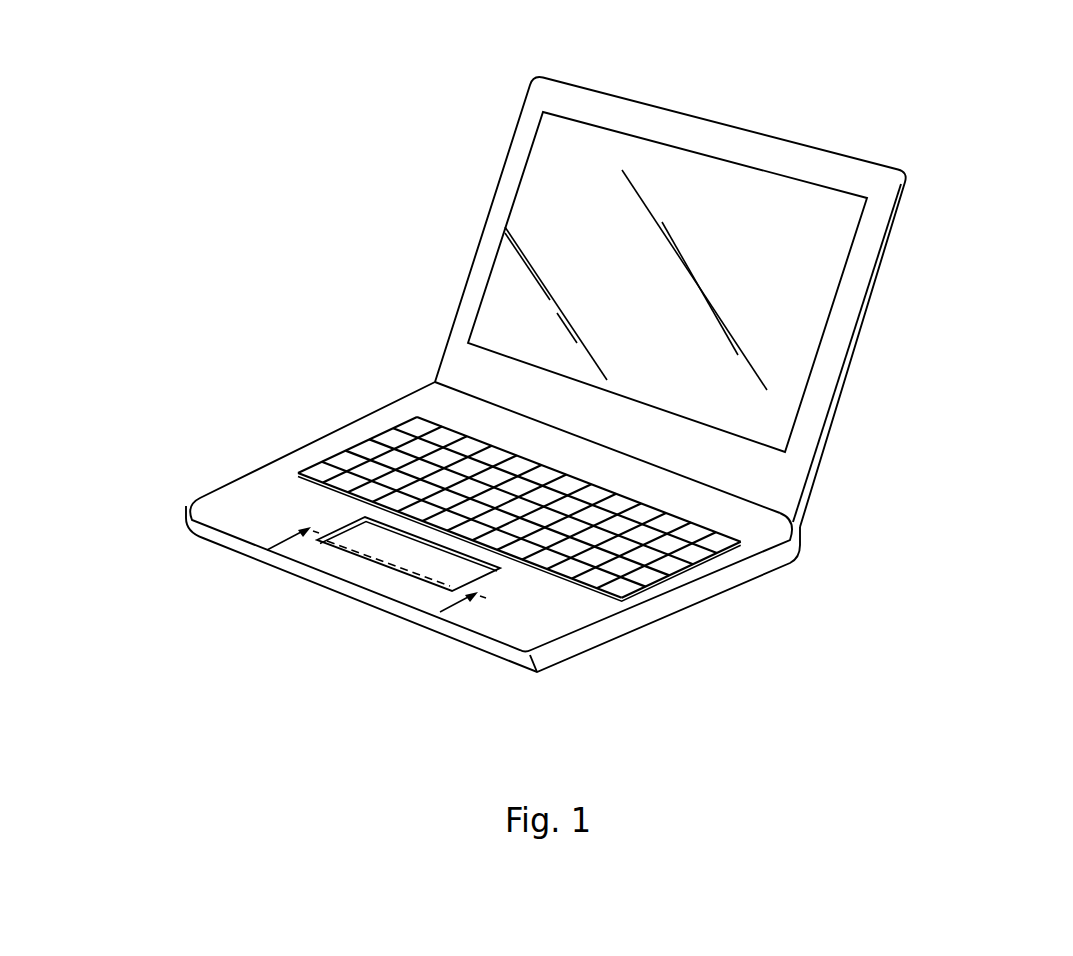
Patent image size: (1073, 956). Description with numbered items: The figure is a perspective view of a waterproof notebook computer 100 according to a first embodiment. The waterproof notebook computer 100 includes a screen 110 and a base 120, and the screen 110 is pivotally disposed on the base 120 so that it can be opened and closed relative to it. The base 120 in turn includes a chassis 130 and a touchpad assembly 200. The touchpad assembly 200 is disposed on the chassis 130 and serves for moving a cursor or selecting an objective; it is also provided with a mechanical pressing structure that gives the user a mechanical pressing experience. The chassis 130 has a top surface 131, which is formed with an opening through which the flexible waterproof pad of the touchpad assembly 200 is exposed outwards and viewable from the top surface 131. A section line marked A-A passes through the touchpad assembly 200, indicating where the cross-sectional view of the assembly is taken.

The waterproof notebook computer 100 is at (1060, 72).
The screen 110 is at (807, 340).
The base 120 is at (407, 355).
The chassis 130 is at (323, 437).
The top surface 131 is at (563, 632).
The touchpad assembly 200 is at (380, 538).